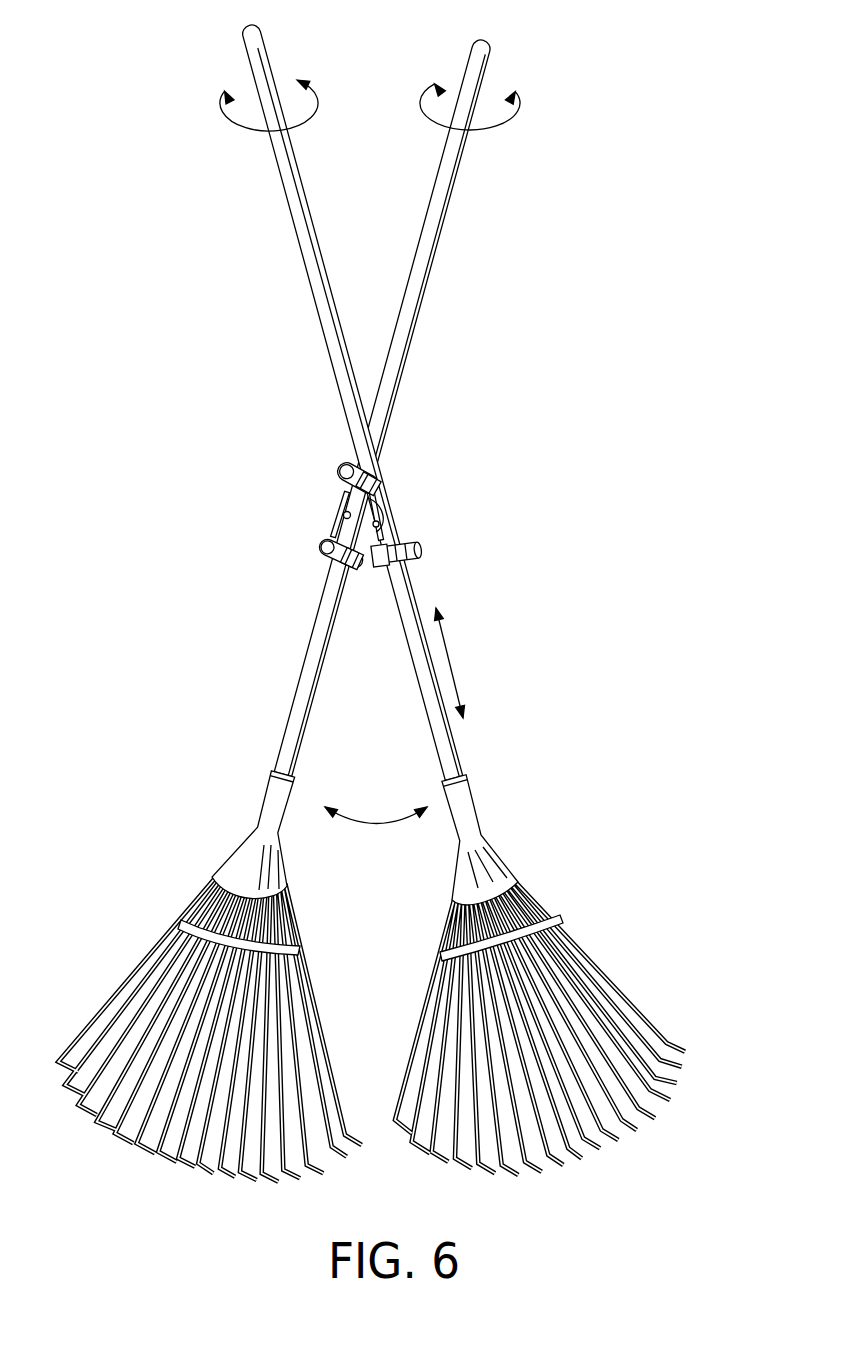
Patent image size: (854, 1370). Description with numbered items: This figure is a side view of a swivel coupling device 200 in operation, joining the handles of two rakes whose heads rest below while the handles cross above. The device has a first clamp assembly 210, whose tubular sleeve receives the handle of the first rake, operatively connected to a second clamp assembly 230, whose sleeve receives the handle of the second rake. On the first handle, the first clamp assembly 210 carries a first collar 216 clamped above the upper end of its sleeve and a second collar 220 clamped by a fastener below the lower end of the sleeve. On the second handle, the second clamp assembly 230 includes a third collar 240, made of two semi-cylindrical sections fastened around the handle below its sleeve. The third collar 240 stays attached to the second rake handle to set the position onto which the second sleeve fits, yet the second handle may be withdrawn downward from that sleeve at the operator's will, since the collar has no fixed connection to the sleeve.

The swivel coupling device 200 is at (371, 603).
The first clamp assembly 210 is at (307, 515).
The first collar 216 is at (357, 460).
The second collar 220 is at (330, 562).
The second clamp assembly 230 is at (412, 497).
The third collar 240 is at (423, 542).